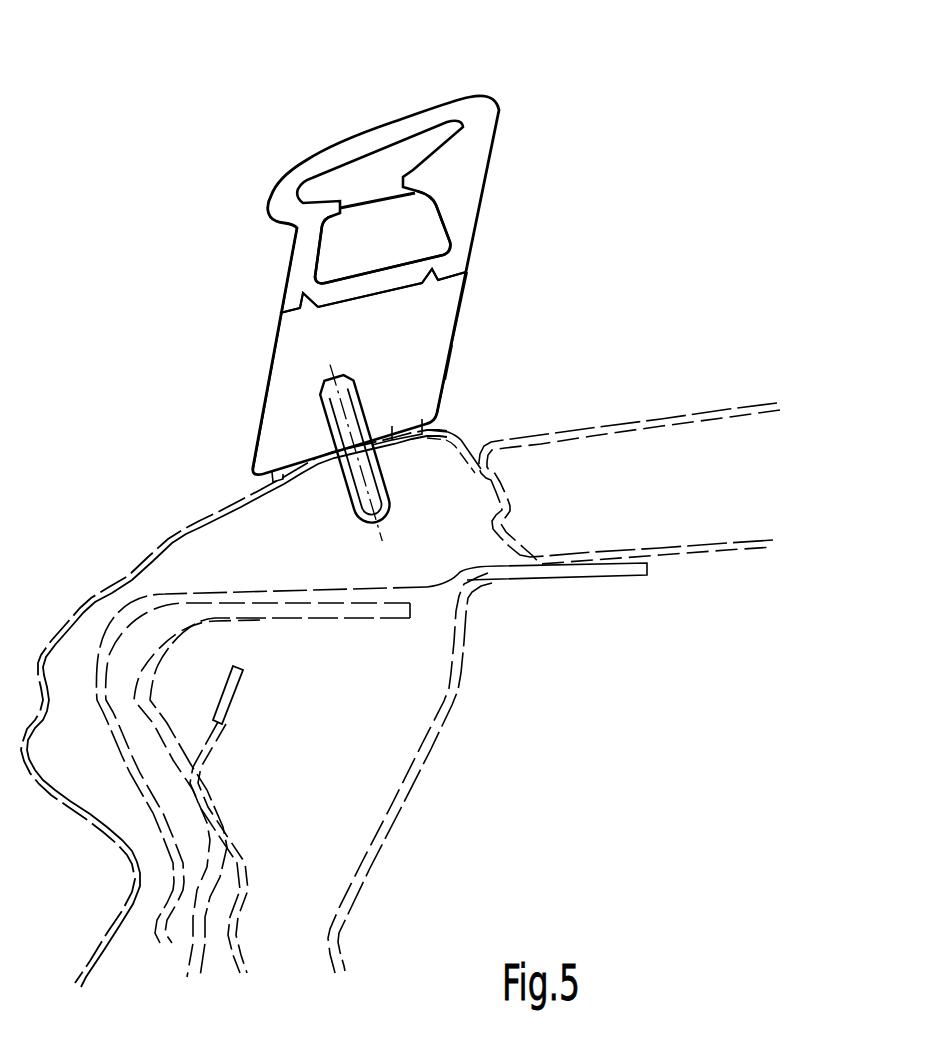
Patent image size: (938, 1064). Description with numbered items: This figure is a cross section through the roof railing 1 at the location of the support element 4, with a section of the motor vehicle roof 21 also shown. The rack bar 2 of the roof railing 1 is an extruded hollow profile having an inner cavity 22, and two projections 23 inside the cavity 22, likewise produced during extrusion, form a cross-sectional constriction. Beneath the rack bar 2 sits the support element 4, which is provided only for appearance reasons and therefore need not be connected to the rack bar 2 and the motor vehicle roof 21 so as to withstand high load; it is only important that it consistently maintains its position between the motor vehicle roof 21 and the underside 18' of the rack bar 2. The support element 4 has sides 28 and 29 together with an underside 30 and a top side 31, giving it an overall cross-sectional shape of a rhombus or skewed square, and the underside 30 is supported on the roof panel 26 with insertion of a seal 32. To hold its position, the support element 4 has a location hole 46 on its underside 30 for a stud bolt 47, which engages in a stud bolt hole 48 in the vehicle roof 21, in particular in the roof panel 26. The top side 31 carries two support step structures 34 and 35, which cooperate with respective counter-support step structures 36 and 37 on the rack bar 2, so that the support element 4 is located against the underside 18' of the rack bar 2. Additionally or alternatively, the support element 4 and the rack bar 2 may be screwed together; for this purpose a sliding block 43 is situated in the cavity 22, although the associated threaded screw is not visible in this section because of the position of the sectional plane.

The roof railing 1 is at (183, 217).
The rack bar 2 is at (484, 206).
The support element 4 is at (456, 343).
The underside of the rack bar 18' is at (378, 317).
The motor vehicle roof 21 is at (181, 528).
The inner cavity 22 is at (390, 193).
The projections 23 is at (340, 200).
The roof panel 26 is at (218, 517).
The side of the support element 28 is at (259, 418).
The side of the support element 29 is at (447, 363).
The underside of the support element 30 is at (397, 440).
The top side of the support element 31 is at (352, 297).
The seal 32 is at (272, 476).
The support step structure 34 is at (304, 306).
The support step structure 35 is at (440, 284).
The counter-support step structure 36 is at (298, 301).
The counter-support step structure 37 is at (433, 273).
The sliding block 43 is at (418, 214).
The location hole 46 is at (358, 407).
The stud bolt 47 is at (352, 490).
The stud bolt hole 48 is at (372, 460).